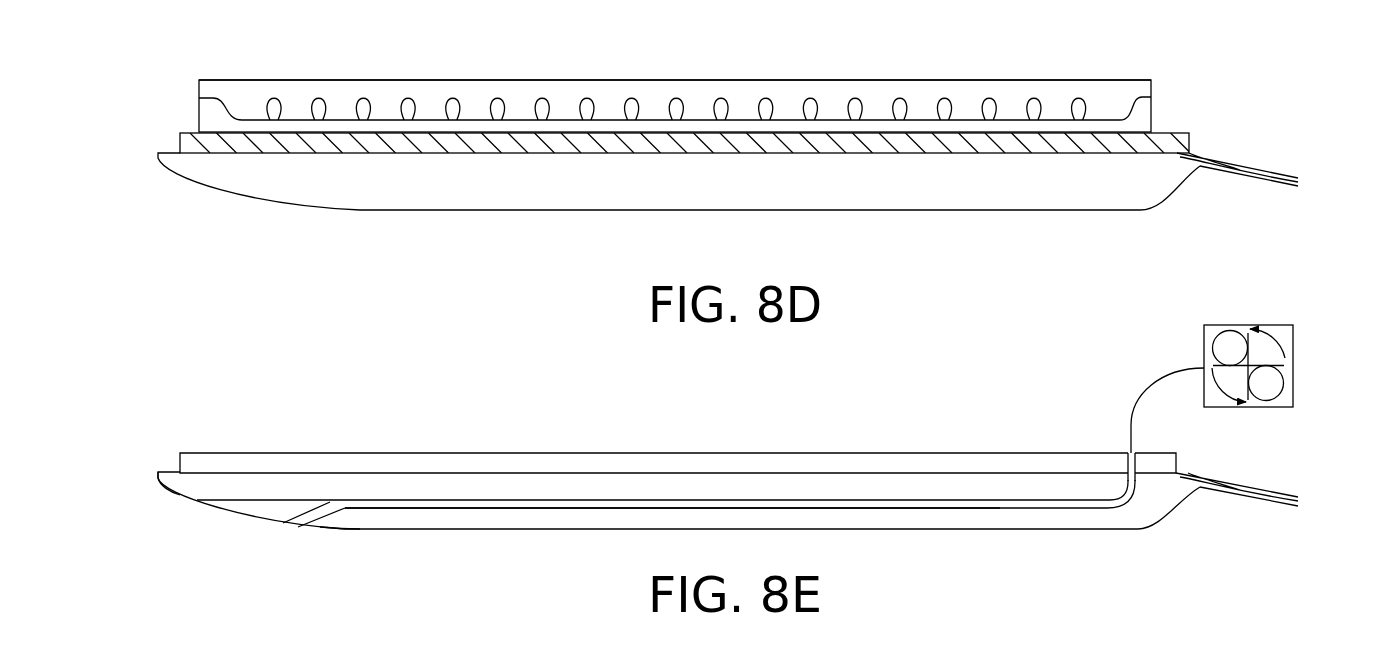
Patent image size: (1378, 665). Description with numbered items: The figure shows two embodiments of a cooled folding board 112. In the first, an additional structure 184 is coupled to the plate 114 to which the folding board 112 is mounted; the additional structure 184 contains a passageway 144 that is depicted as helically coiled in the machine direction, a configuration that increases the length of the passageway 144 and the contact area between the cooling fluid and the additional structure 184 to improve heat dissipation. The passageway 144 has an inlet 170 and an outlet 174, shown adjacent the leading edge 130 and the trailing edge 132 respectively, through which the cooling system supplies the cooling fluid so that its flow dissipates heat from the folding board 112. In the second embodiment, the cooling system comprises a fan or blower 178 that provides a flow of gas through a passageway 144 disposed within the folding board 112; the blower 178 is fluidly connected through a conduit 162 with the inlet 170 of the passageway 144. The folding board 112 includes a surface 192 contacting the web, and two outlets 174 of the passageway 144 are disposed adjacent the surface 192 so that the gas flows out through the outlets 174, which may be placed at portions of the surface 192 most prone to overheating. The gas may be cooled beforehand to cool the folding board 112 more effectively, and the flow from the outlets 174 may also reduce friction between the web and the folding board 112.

In FIG. 8D, the folding board 112 is at (422, 212).
In FIG. 8E, the folding board 112 is at (608, 532).
In FIG. 8D, the plate 114 is at (178, 146).
In FIG. 8E, the plate 114 is at (652, 452).
In FIG. 8E, the leading edge 130 is at (158, 484).
In FIG. 8D, the trailing edge 132 is at (1270, 165).
In FIG. 8E, the trailing edge 132 is at (1266, 480).
In FIG. 8D, the passageway 144 is at (645, 106).
In FIG. 8E, the passageway 144 is at (473, 511).
In FIG. 8E, the conduit 162 is at (1153, 392).
In FIG. 8D, the inlet 170 is at (196, 96).
In FIG. 8E, the inlet 170 is at (1124, 450).
In FIG. 8D, the outlet 174 is at (1162, 92).
In FIG. 8E, the outlet 174 is at (205, 503).
In FIG. 8E, the fan or blower 178 is at (1204, 336).
In FIG. 8D, the additional structure 184 is at (1003, 80).
In FIG. 8E, the surface 192 is at (342, 531).